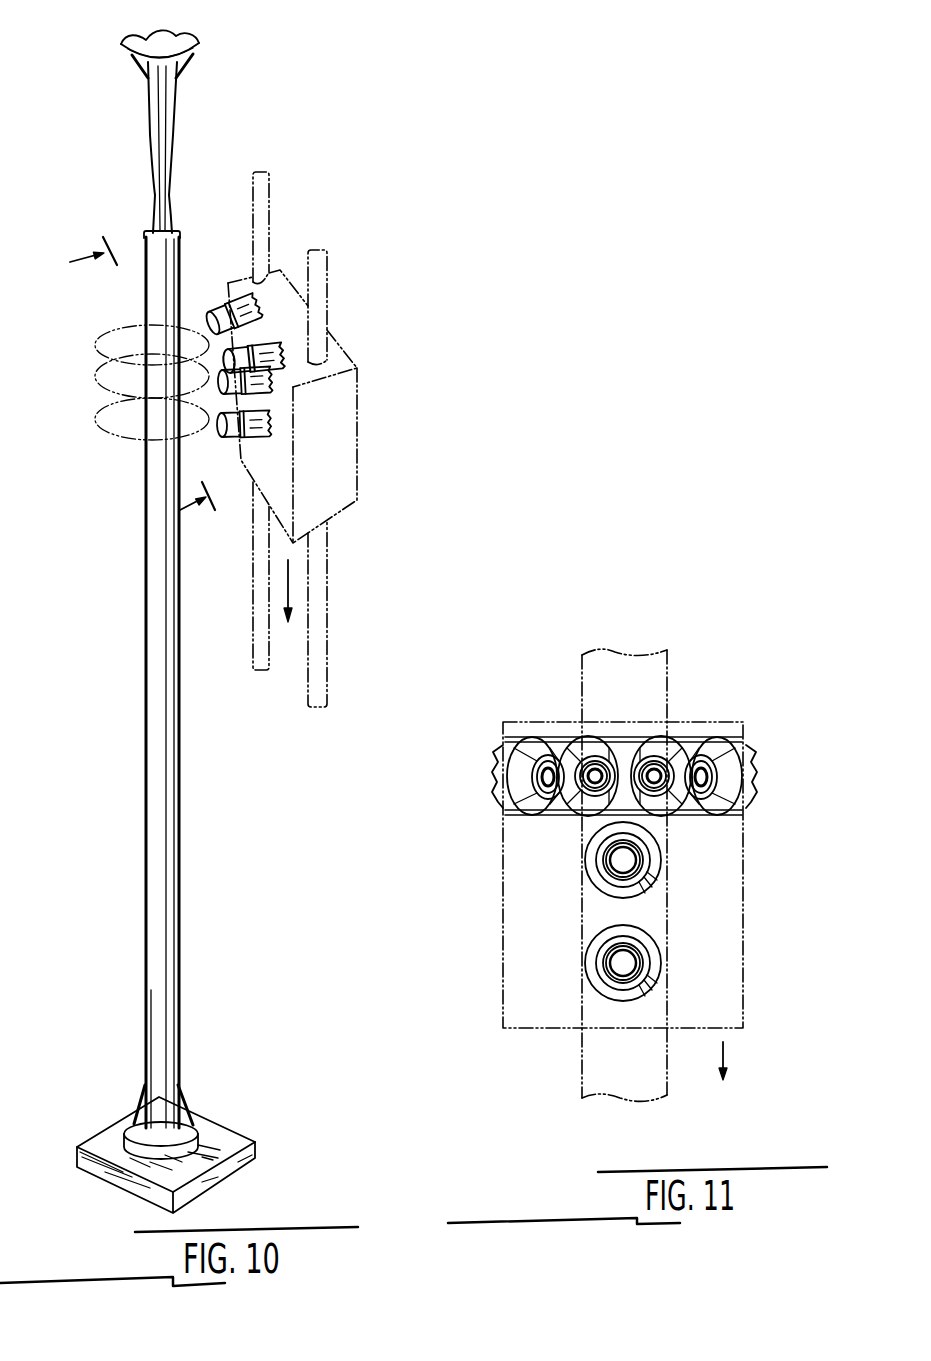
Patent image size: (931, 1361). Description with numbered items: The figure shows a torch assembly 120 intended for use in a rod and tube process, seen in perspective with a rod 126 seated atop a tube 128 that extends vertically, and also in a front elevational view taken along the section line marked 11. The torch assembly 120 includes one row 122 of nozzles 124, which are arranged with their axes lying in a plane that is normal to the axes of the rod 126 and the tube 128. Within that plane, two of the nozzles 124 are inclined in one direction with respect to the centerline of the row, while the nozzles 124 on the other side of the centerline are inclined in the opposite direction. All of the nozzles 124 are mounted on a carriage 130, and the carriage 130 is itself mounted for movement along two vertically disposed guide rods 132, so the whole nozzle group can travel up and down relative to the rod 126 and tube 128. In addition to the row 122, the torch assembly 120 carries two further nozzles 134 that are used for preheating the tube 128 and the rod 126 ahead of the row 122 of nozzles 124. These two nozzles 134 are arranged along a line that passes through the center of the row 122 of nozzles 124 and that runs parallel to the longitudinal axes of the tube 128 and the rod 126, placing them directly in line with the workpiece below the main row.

In FIG. 10, the section line indicator for FIG. 11 is at (140, 393).
In FIG. 10, the torch assembly 120 is at (332, 376).
In FIG. 11, the torch assembly 120 is at (610, 844).
In FIG. 11, the row 122 is at (487, 776).
In FIG. 10, the nozzles 124 is at (210, 318).
In FIG. 11, the nozzles 124 is at (731, 723).
In FIG. 10, the rod 126 is at (168, 194).
In FIG. 10, the tube 128 is at (143, 292).
In FIG. 11, the tube 128 is at (668, 657).
In FIG. 10, the carriage 130 is at (358, 497).
In FIG. 10, the guide rods 132 is at (327, 620).
In FIG. 11, the nozzles 134 is at (655, 863).